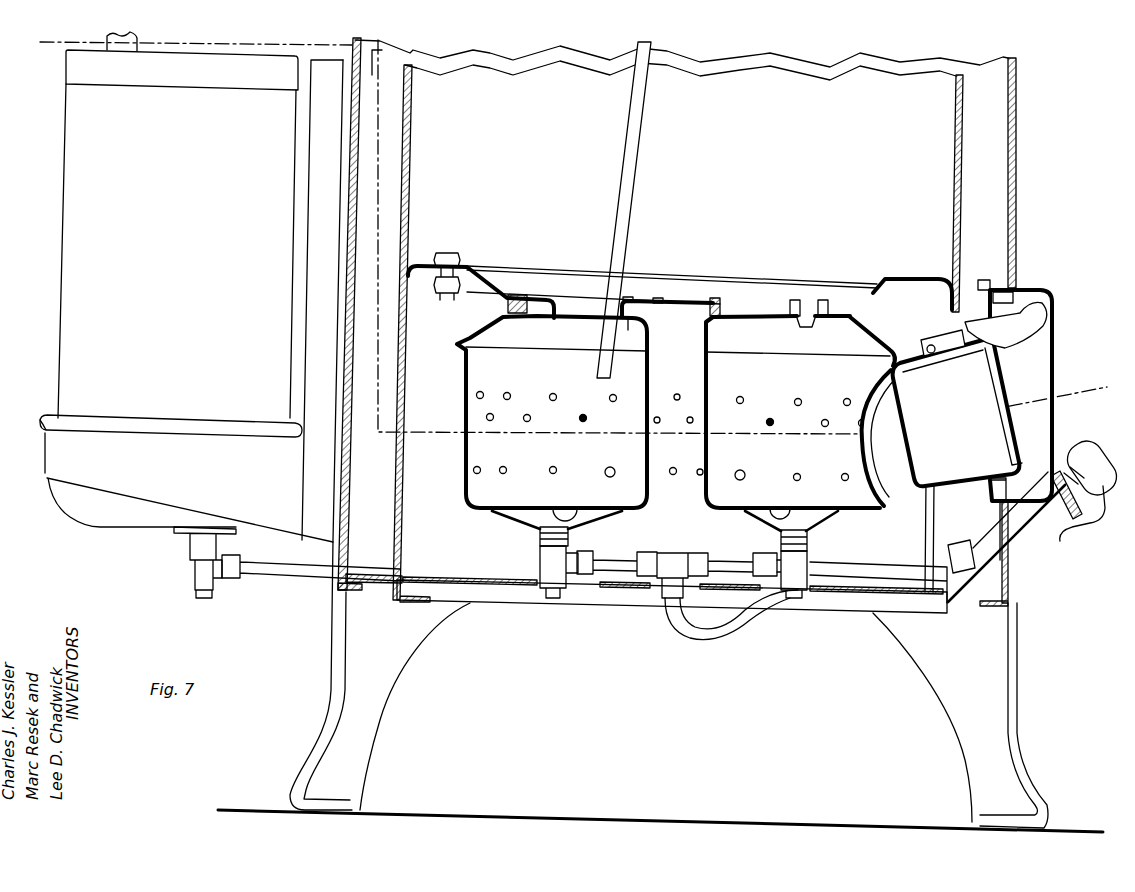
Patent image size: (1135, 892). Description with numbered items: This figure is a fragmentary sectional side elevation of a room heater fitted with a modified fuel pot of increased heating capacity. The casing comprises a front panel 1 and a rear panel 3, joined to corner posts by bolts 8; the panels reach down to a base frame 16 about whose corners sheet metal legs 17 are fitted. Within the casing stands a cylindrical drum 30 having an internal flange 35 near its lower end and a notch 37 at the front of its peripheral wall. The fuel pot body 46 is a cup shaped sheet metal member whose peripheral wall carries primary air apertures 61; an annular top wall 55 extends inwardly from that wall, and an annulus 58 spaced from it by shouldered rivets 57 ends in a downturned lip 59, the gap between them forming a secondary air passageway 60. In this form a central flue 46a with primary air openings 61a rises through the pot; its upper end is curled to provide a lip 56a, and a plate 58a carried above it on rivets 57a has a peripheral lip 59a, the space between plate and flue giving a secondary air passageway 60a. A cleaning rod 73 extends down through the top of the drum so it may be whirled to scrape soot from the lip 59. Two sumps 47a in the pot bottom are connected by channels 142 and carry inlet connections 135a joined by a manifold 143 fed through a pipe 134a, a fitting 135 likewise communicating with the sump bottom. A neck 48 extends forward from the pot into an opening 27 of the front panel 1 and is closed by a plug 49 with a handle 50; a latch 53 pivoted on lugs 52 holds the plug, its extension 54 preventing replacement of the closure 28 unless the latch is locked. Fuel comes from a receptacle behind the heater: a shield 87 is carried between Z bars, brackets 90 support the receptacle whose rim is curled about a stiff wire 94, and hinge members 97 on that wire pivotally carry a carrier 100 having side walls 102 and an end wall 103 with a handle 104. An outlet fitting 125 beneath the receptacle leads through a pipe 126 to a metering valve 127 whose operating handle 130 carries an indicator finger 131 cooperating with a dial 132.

The front panel 1 is at (1011, 200).
The rear panel 3 is at (352, 233).
The fastening means or bolts 8 is at (28, 32).
The base frame 16 is at (1007, 602).
The legs 17 is at (380, 694).
The opening 27 is at (992, 292).
The closure 28 is at (1028, 382).
The cylindrical drum 30 is at (408, 147).
The flange 35 is at (468, 267).
The notch 37 is at (926, 528).
The body 46 is at (479, 373).
The central flue 46a is at (713, 373).
The sumps 47a is at (522, 511).
The neck 48 is at (867, 458).
The plug 49 is at (919, 418).
The handle 50 is at (994, 431).
The lugs 52 is at (940, 360).
The latch 53 is at (984, 321).
The extension 54 is at (1057, 313).
The annular top wall 55 is at (878, 333).
The lip 56a is at (633, 333).
The rivets 57 is at (518, 295).
The rivets 57a is at (730, 308).
The annulus 58 is at (863, 278).
The plate 58a is at (682, 274).
The lip 59 is at (793, 300).
The downturned peripheral lip 59a is at (746, 325).
The passageway 60 is at (823, 300).
The secondary air passageway 60a is at (641, 300).
The apertures 61 is at (509, 467).
The primary air admitting openings 61a is at (700, 470).
The cleaning rod 73 is at (631, 178).
The shield 87 is at (317, 192).
The brackets 90 is at (189, 487).
The wire 94 is at (191, 418).
The hinge members 97 is at (44, 414).
The carrier 100 is at (78, 222).
The side walls 102 is at (177, 251).
The end wall 103 is at (267, 90).
The handle 104 is at (125, 52).
The outlet fitting 125 is at (193, 573).
The pipe 126 is at (323, 580).
The valve 127 is at (1008, 578).
The operating handle 130 is at (1090, 447).
The indicator finger 131 is at (1100, 516).
The dial 132 is at (1062, 538).
The pipe 134a is at (738, 622).
The fitting 135 is at (547, 574).
The inlet connections 135a is at (808, 570).
The channels 142 is at (565, 508).
The manifold 143 is at (621, 558).